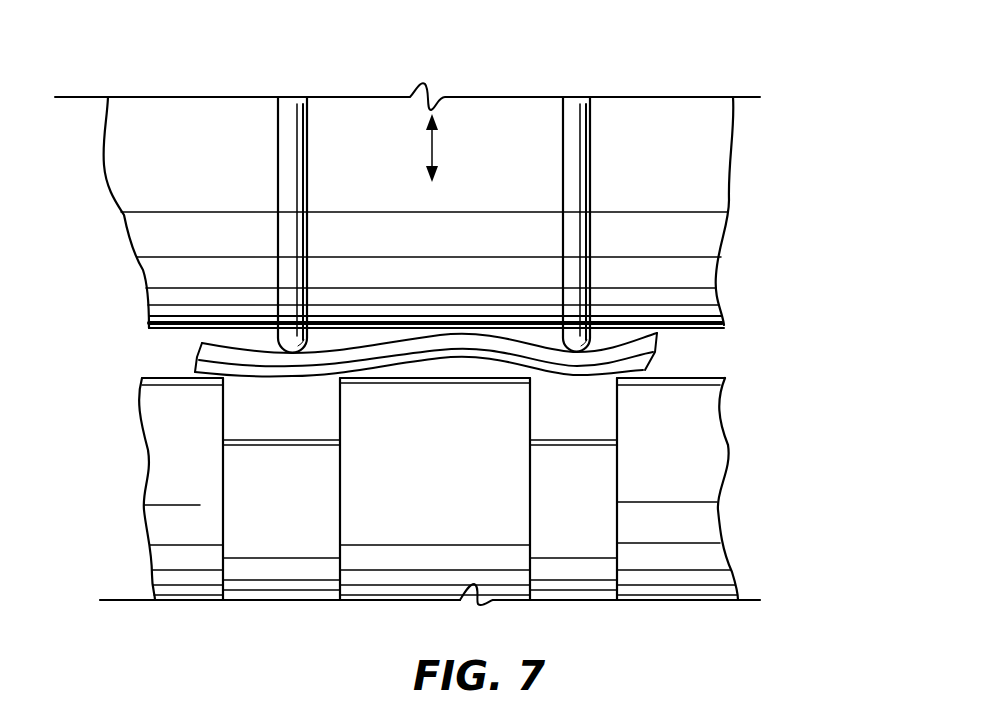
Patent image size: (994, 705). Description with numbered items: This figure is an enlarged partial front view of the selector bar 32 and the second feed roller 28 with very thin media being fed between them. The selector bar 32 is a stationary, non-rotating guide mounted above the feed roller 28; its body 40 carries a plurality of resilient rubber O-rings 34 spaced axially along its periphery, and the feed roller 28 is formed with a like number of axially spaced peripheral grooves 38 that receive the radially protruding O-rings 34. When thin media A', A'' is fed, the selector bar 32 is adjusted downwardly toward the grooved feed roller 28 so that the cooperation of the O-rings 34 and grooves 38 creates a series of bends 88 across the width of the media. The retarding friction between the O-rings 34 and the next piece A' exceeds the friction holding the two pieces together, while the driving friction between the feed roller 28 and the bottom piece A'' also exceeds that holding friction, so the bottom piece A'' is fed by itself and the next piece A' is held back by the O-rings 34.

The selector bar 32 is at (247, 87).
The punch body 40 is at (637, 108).
The O-rings 34 is at (287, 175).
The peripheral grooves 38 is at (313, 420).
The bends 88 is at (293, 382).
The second feed roller 28 is at (363, 603).
The next piece of media A' is at (456, 354).
The bottommost piece of media A'' is at (465, 363).